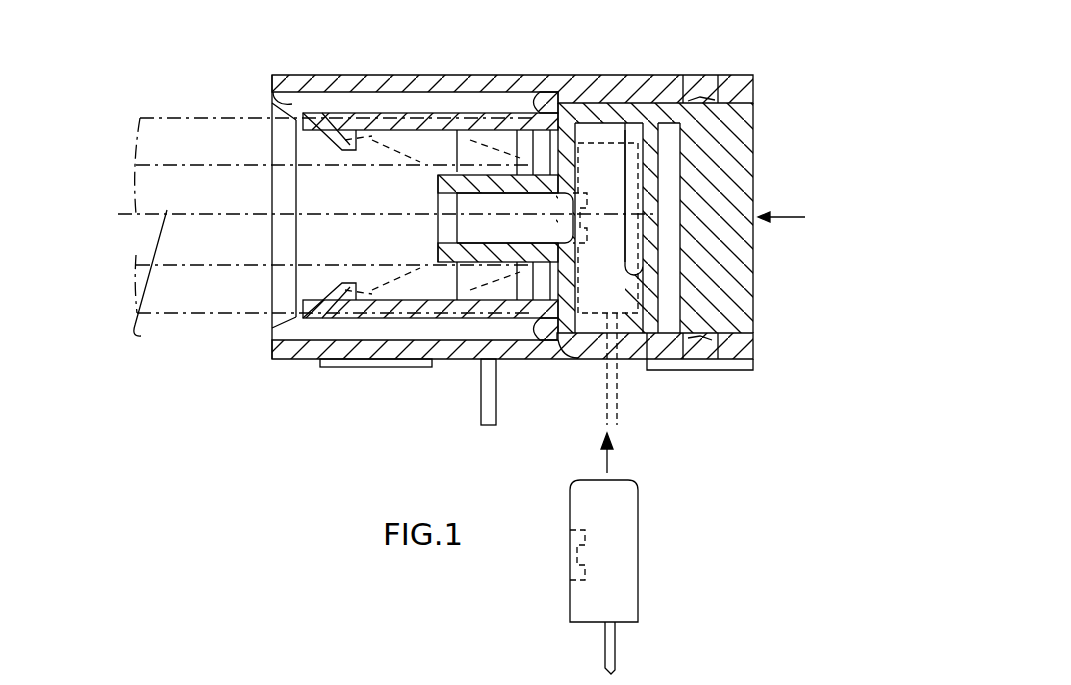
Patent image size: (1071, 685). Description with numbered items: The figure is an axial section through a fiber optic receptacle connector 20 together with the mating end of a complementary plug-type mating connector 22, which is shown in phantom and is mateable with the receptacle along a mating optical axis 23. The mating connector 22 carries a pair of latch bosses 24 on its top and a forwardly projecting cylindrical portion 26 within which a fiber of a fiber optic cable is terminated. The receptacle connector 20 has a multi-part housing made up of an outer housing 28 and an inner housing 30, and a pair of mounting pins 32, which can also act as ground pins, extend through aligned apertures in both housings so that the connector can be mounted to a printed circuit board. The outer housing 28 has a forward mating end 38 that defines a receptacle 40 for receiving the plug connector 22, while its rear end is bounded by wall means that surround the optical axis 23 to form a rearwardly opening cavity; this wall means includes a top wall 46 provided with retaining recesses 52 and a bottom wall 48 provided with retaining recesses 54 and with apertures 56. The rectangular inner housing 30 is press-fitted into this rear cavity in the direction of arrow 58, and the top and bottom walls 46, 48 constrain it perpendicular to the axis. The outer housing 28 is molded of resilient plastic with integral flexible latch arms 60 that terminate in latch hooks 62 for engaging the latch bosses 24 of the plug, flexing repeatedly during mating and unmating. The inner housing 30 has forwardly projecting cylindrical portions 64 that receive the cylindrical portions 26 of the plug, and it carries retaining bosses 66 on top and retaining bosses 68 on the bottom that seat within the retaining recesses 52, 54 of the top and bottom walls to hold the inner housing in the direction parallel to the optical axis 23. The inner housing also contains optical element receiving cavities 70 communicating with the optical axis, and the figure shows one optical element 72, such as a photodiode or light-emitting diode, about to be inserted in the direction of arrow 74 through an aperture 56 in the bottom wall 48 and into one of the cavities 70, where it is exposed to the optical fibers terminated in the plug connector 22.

The fiber optic connector 20 is at (768, 112).
The mating connector 22 is at (176, 104).
The mating optical axis 23 is at (154, 279).
The latch bosses 24 is at (412, 92).
The forwardly projecting cylindrical portion 26 is at (445, 363).
The outer housing 28 is at (590, 72).
The inner housing 30 is at (738, 160).
The mounting pins 32 is at (478, 400).
The forward mating end 38 is at (336, 87).
The receptacle 40 is at (275, 103).
The top wall 46 is at (733, 88).
The bottom wall 48 is at (670, 347).
The retaining recesses 52 is at (690, 98).
The retaining recesses 54 is at (692, 350).
The apertures 56 is at (558, 342).
The arrow 58 is at (794, 217).
The flexible latch arms 60 is at (446, 128).
The latch hooks 62 is at (349, 148).
The forwardly projecting cylindrical portions 64 is at (494, 176).
The retaining bosses 66 is at (710, 98).
The retaining bosses 68 is at (708, 345).
The optical element receiving cavities 70 is at (646, 300).
The optical element 72 is at (605, 303).
The arrow 74 is at (603, 460).